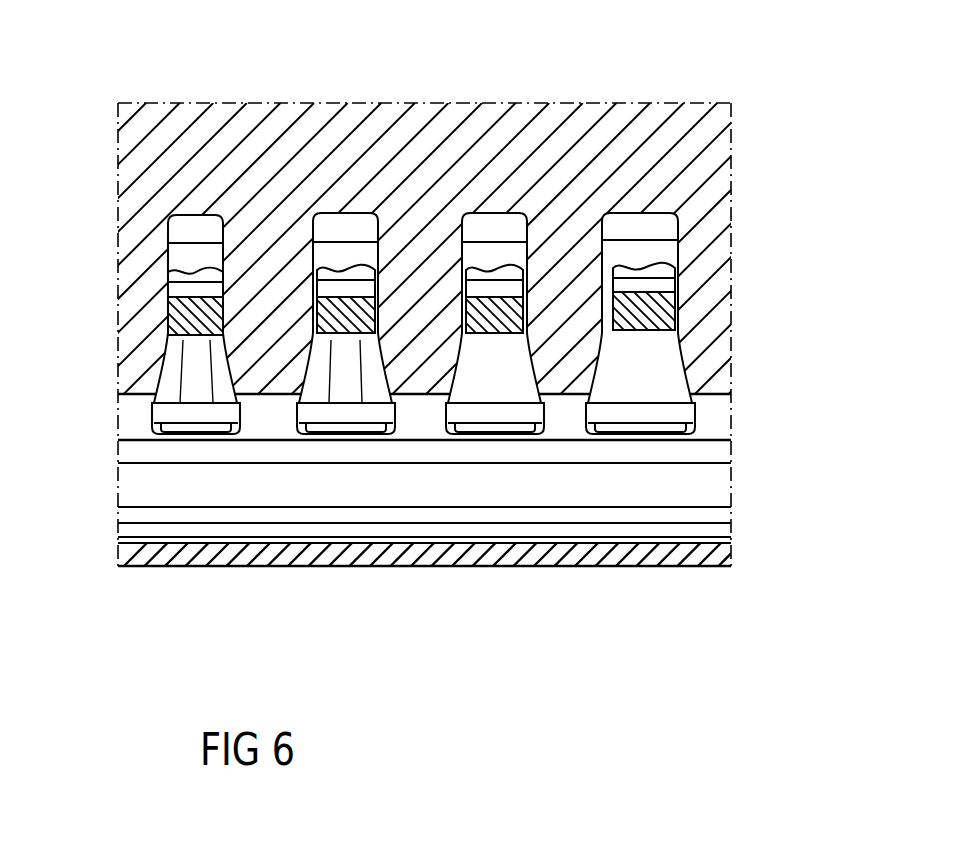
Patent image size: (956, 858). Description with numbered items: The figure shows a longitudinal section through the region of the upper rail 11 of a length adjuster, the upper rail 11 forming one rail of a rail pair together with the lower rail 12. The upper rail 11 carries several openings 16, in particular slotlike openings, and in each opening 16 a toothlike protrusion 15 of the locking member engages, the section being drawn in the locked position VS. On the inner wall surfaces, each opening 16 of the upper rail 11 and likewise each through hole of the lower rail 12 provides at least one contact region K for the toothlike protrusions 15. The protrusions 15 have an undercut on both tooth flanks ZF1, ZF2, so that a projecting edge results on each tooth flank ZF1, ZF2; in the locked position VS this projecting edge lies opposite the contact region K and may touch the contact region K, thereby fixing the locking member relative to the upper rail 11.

The upper rail 11 is at (718, 153).
The lower rail 12 is at (665, 253).
The toothlike protrusion 15 is at (662, 323).
The opening 16 is at (200, 228).
The contact region K is at (228, 310).
The first tooth flank ZF1 is at (180, 403).
The second tooth flank ZF2 is at (213, 403).
The locked position VS is at (731, 77).